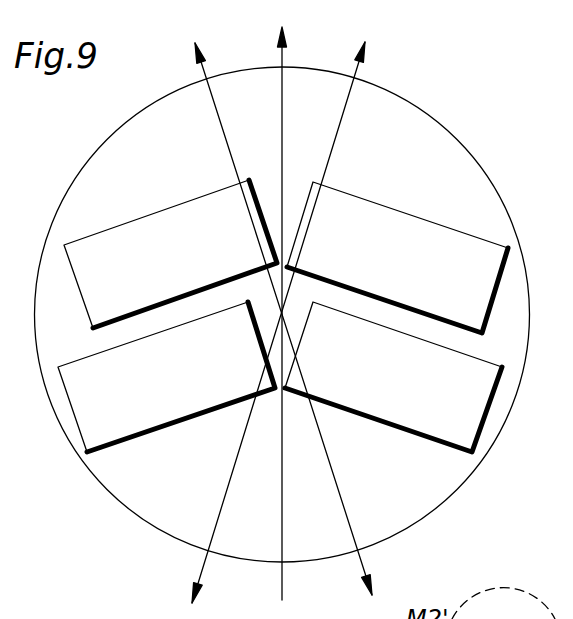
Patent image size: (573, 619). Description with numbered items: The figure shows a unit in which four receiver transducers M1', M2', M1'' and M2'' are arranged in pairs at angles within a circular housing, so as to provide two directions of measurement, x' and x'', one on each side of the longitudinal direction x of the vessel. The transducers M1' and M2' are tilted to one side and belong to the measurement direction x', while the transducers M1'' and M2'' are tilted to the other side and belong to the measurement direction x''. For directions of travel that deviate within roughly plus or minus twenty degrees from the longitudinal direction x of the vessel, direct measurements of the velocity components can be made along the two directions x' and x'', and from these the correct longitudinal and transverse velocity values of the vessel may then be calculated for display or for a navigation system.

The longitudinal direction of the vessel x is at (301, 305).
The first direction of measurement x' is at (276, 308).
The second direction of measurement x'' is at (298, 314).
The receiver transducer M1' is at (170, 254).
The receiver transducer M1'' is at (397, 257).
The receiver transducer M2' is at (166, 377).
The receiver transducer M2'' is at (393, 377).